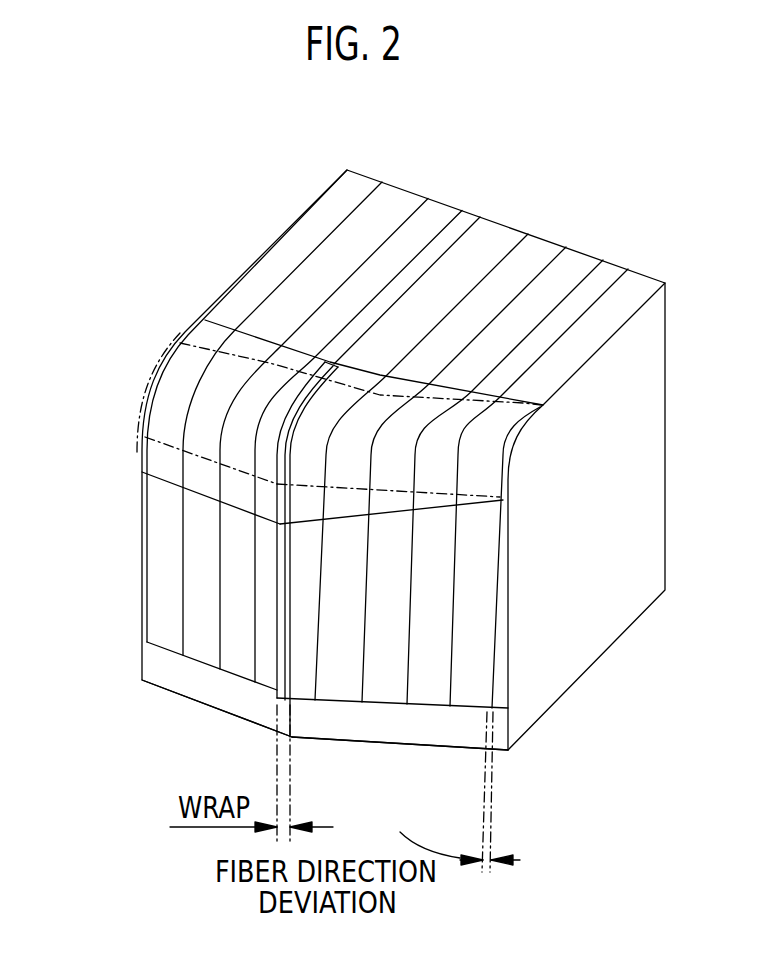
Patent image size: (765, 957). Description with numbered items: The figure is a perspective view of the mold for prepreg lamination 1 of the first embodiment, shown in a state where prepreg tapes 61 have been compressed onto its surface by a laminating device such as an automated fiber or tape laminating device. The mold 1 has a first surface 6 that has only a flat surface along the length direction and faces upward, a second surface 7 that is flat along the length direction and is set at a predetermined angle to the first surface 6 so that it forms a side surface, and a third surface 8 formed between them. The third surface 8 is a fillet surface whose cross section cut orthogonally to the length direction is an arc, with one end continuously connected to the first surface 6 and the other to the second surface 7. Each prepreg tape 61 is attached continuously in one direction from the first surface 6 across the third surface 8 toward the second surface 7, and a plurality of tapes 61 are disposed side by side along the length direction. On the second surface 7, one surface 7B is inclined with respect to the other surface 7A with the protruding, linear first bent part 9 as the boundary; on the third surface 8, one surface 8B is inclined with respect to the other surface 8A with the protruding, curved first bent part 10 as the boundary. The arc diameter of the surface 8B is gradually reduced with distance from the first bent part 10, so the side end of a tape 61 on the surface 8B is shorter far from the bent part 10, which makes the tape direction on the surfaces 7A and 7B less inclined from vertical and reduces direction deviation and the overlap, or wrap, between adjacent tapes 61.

The mold for prepreg lamination 1 is at (633, 412).
The first surface 6 is at (470, 227).
The prepreg tape 61 is at (397, 200).
The second surface 7 is at (325, 730).
The other surface of the second surface 7A is at (188, 673).
The one surface of the second surface 7B is at (390, 718).
The third surface 8 is at (325, 428).
The other surface of the third surface 8A is at (157, 458).
The one surface of the third surface 8B is at (485, 458).
The first bent part 9 is at (293, 677).
The first bent part 10 is at (322, 395).